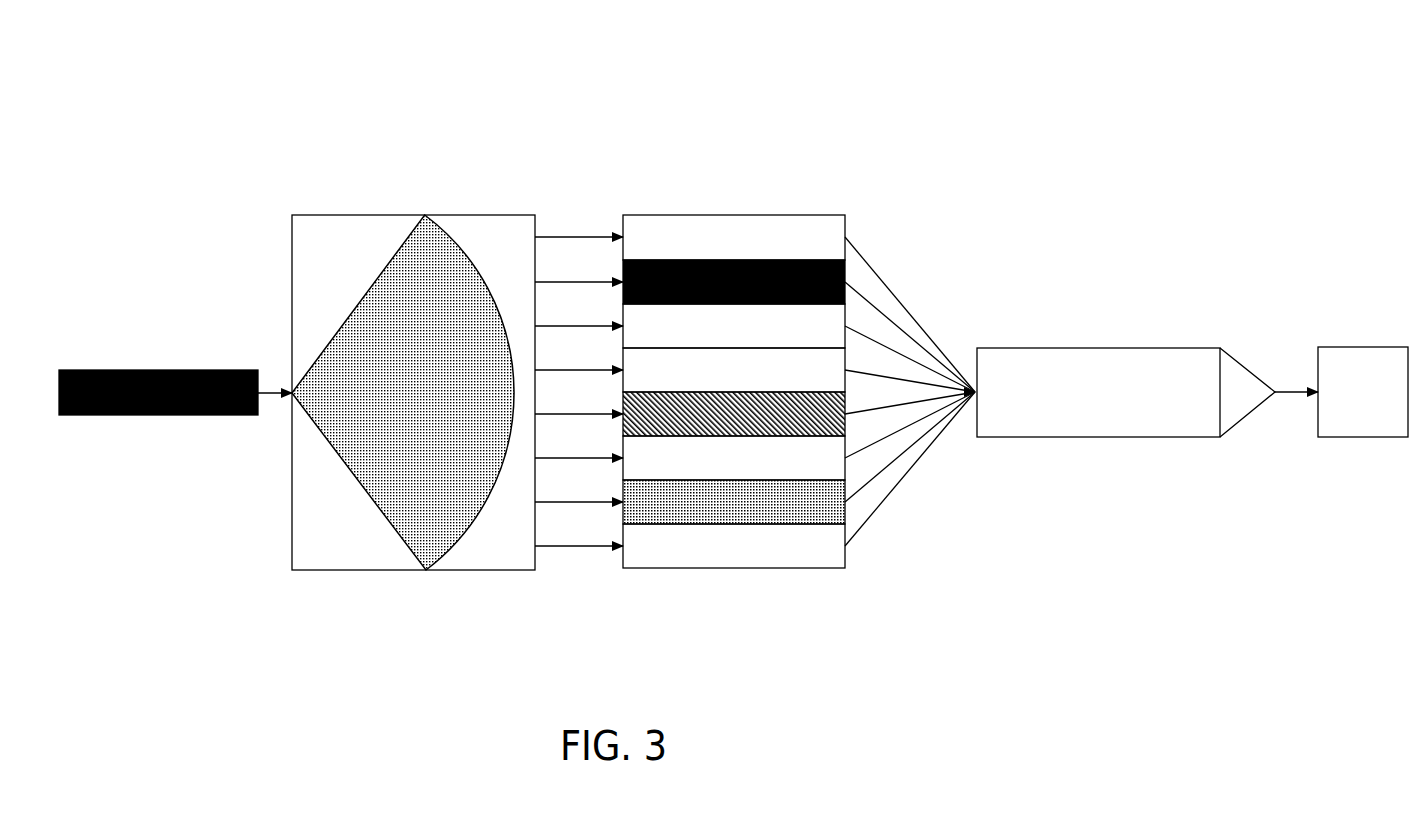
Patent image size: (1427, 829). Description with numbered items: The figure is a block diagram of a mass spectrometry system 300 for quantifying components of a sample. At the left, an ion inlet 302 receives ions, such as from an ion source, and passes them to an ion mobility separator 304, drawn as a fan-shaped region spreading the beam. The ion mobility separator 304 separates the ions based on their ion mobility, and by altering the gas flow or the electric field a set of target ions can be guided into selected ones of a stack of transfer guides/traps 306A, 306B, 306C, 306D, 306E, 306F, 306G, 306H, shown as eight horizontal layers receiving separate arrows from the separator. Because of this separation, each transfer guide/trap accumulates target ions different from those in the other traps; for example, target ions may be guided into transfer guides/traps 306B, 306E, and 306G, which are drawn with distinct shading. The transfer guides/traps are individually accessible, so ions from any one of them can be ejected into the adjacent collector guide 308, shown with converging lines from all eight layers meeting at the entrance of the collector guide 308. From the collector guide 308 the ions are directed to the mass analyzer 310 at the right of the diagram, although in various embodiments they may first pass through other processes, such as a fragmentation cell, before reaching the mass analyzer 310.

The mass spectrometry system 300 is at (1110, 149).
The ion inlet 302 is at (158, 370).
The ion mobility separator 304 is at (413, 215).
The transfer guide/trap 306A is at (733, 237).
The transfer guide/trap 306B is at (733, 282).
The transfer guide/trap 306C is at (733, 326).
The transfer guide/trap 306D is at (733, 370).
The transfer guide/trap 306E is at (735, 414).
The transfer guide/trap 306F is at (735, 458).
The transfer guide/trap 306G is at (735, 502).
The transfer guide/trap 306H is at (735, 546).
The collector guide 308 is at (1100, 347).
The mass analyzer 310 is at (1365, 437).